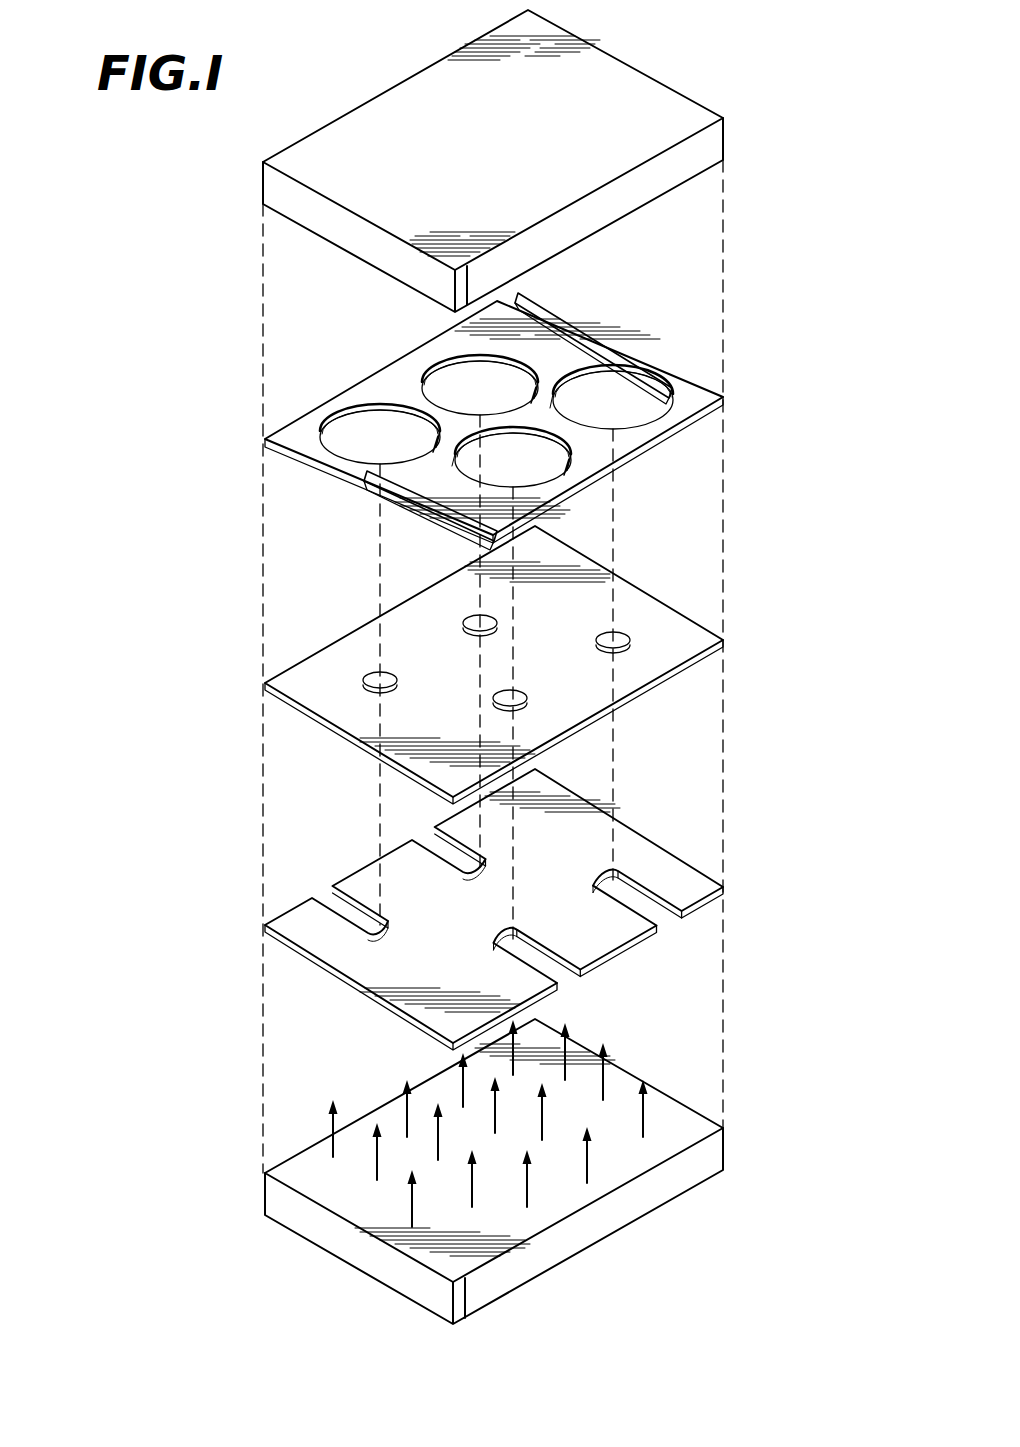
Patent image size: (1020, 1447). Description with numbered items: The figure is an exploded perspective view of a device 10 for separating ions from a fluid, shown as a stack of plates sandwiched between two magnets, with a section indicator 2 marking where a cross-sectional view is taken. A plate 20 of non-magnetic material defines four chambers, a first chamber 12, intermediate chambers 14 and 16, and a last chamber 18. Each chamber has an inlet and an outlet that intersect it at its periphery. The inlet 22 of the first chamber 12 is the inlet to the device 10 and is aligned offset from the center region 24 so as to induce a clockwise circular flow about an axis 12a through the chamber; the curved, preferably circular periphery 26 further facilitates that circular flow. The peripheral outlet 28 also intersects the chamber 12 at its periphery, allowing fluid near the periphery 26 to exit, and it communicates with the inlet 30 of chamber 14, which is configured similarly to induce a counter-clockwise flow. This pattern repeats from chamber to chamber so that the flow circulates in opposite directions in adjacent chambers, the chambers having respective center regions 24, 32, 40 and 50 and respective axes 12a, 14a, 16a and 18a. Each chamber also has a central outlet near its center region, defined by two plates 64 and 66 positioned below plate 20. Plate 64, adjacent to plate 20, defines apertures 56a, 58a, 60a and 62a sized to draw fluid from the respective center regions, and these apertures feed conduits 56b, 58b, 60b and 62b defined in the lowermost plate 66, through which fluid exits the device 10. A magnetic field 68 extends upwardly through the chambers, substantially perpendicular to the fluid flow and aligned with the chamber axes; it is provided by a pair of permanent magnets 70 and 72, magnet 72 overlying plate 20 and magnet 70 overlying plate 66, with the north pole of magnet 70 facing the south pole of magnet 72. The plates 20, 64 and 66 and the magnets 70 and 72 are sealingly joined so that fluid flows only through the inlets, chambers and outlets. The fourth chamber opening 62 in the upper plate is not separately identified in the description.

The device 10 is at (225, 311).
The section line of FIG. 2 is at (693, 324).
The first chamber 12 is at (343, 478).
The chamber 14 is at (612, 478).
The chamber 16 is at (448, 355).
The last chamber 18 is at (700, 397).
The axis 18a is at (612, 543).
The plate 20 is at (713, 415).
The inlet 22 is at (448, 550).
The center region 24 is at (378, 432).
The periphery 26 is at (330, 427).
The peripheral outlet 28 is at (385, 515).
The inlet 30 is at (462, 460).
The center region 32 is at (513, 460).
The center region 40 is at (423, 372).
The center region 50 is at (650, 372).
The fourth aperture 62 is at (611, 397).
The axis 12a is at (378, 632).
The axis 14a is at (513, 627).
The axis 16a is at (480, 604).
The plate 64 is at (683, 610).
The aperture 56a is at (365, 680).
The aperture 58a is at (528, 698).
The aperture 60a is at (483, 637).
The aperture 62a is at (632, 640).
The lowermost plate 66 is at (725, 897).
The conduit 56b is at (350, 893).
The conduit 58b is at (525, 950).
The conduit 60b is at (460, 856).
The conduit 62b is at (623, 888).
The magnetic field 68 is at (527, 1197).
The permanent magnet 70 is at (653, 1198).
The permanent magnet 72 is at (683, 107).